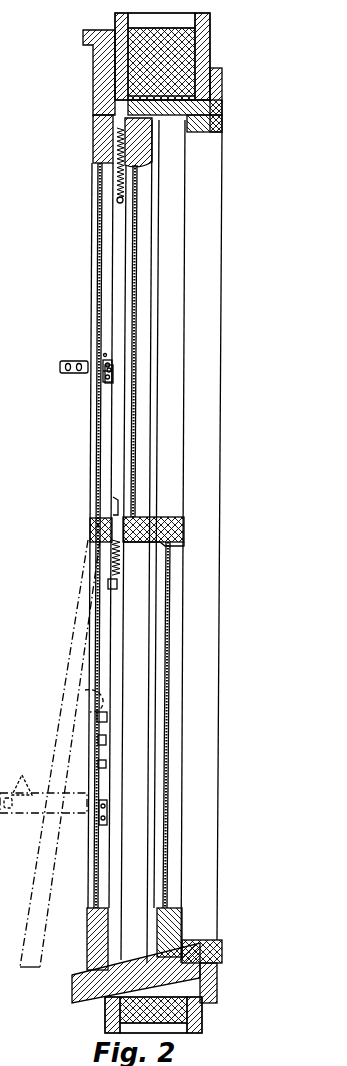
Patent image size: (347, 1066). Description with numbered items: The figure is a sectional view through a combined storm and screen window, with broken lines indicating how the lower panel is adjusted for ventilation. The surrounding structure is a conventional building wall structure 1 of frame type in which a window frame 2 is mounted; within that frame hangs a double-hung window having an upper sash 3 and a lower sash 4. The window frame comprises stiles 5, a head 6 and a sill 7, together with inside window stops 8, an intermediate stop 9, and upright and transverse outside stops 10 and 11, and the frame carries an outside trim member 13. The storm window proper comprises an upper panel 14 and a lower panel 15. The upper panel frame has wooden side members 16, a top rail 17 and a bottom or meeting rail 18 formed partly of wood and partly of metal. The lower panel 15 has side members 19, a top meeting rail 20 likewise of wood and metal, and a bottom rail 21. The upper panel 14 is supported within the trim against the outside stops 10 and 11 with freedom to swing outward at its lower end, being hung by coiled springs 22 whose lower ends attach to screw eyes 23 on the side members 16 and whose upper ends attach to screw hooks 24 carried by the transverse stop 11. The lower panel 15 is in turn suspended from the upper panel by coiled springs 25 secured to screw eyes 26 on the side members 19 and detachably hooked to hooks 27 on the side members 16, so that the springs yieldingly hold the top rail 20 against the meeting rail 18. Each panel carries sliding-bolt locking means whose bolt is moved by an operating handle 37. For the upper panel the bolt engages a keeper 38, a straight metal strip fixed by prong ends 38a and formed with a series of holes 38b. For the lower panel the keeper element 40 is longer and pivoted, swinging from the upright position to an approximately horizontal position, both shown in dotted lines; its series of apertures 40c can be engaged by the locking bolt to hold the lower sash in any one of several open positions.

The building wall structure 1 is at (212, 50).
The window frame 2 is at (221, 228).
The upper sash 3 is at (153, 157).
The lower sash 4 is at (180, 917).
The stile 5 is at (180, 264).
The head 6 is at (213, 110).
The sill 7 is at (72, 988).
The inside window stop 8 is at (207, 157).
The intermediate stop 9 is at (158, 309).
The upright outside stop 10 is at (120, 270).
The transverse outside stop 11 is at (93, 122).
The outside trim member 13 is at (93, 82).
The upper panel 14 is at (88, 412).
The lower panel 15 is at (87, 635).
The side member 16 is at (92, 447).
The top rail 17 is at (92, 153).
The meeting rail 18 is at (90, 522).
The side member 19 is at (90, 700).
The top meeting rail 20 is at (88, 535).
The bottom rail 21 is at (87, 945).
The coiled spring 22 is at (118, 184).
The screw eye 23 is at (118, 205).
The screw hook 24 is at (93, 143).
The coiled spring 25 is at (115, 553).
The screw eye 26 is at (110, 588).
The hook 27 is at (117, 497).
The operating handle 37 is at (112, 382).
The keeper 38 is at (103, 357).
The prong end 38a is at (104, 352).
The hole 38b is at (102, 378).
The keeper element 40 is at (90, 690).
The aperture 40c is at (17, 773).